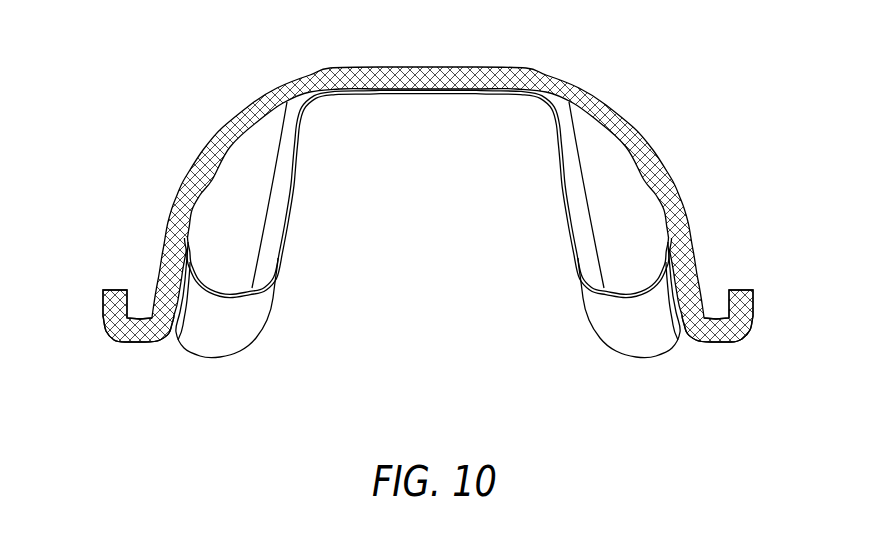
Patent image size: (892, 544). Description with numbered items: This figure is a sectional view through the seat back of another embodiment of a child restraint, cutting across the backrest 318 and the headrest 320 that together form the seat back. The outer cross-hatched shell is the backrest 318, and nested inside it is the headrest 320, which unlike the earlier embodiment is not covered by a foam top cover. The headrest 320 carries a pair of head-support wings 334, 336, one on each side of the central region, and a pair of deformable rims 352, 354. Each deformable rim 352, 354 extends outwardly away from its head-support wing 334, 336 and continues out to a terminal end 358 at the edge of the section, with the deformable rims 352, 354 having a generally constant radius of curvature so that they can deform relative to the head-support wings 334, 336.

The backrest 318 is at (428, 64).
The headrest 320 is at (565, 142).
The head-support wing 334 is at (282, 174).
The head-support wing 336 is at (574, 174).
The deformable rim 352 is at (223, 317).
The deformable rim 354 is at (633, 317).
The terminal end 358 is at (167, 225).